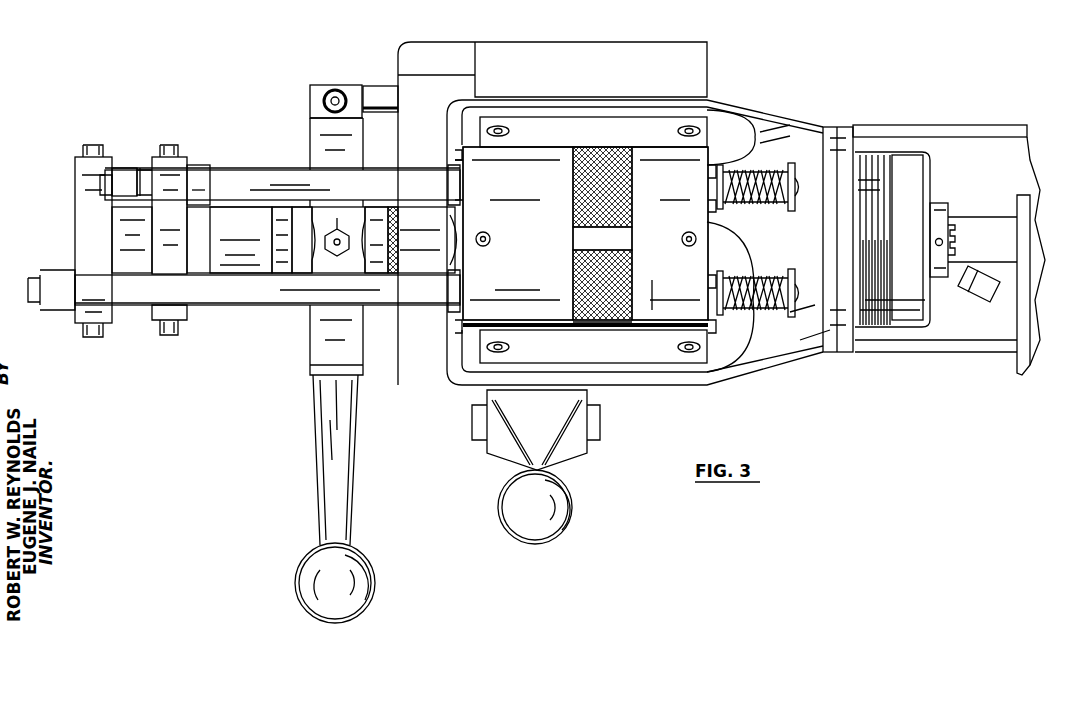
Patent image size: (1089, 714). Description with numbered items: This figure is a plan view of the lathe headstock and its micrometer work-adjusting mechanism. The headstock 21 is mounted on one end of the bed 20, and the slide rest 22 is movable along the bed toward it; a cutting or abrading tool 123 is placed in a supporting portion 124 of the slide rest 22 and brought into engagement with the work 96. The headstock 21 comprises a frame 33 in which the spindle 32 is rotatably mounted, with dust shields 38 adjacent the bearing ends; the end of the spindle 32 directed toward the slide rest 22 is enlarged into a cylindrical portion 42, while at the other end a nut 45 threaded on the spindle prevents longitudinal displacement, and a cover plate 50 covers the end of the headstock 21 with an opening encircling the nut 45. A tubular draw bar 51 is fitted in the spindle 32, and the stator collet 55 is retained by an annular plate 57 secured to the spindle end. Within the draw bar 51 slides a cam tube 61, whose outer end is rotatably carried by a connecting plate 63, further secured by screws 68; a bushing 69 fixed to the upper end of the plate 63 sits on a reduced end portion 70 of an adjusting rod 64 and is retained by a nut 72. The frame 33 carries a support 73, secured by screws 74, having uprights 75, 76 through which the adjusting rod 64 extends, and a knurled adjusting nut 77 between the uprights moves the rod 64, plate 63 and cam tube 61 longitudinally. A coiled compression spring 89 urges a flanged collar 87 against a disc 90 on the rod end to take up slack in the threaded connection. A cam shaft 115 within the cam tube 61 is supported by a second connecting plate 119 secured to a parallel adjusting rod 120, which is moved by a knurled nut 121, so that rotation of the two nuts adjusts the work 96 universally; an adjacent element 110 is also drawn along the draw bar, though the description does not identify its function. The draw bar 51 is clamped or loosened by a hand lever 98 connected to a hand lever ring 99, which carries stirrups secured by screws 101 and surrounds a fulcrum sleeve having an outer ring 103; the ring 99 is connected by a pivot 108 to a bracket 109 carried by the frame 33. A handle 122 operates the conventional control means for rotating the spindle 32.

The bed 20 is at (968, 125).
The headstock 21 is at (736, 380).
The slide rest 22 is at (1025, 370).
The spindle 32 is at (934, 182).
The frame 33 is at (760, 118).
The dust shields 38 is at (850, 127).
The cylindrical portion 42 is at (875, 327).
The nut 45 is at (396, 245).
The cover plate 50 is at (455, 372).
The draw bar 51 is at (218, 262).
The stator collet 55 is at (945, 212).
The annular plate 57 is at (910, 320).
The cam tube 61 is at (190, 244).
The connecting plate 63 is at (192, 165).
The adjusting rod 64 is at (240, 170).
The screws 68 is at (169, 145).
The bushing 69 is at (140, 168).
The reduced end portion 70 is at (100, 185).
The nut 72 is at (120, 165).
The support 73 is at (585, 216).
The screws 74 is at (509, 131).
The upright 75 is at (545, 285).
The upright 76 is at (655, 285).
The knurled adjusting nut 77 is at (612, 160).
The flanged collar 87 is at (792, 168).
The coiled compression spring 89 is at (773, 170).
The disc 90 is at (798, 194).
The work 96 is at (960, 236).
The hand lever 98 is at (330, 465).
The hand lever ring 99 is at (325, 148).
The screws 101 is at (339, 229).
The outer ring 103 is at (392, 232).
The pivot 108 is at (330, 95).
The bracket 109 is at (378, 95).
The block 110 is at (280, 243).
The cam shaft 115 is at (110, 244).
The connecting plate 119 is at (75, 217).
The adjusting rod 120 is at (287, 292).
The knurled nut 121 is at (588, 322).
The handle 122 is at (565, 460).
The cutting or abrading tool 123 is at (1000, 287).
The supporting portion 124 is at (1032, 350).